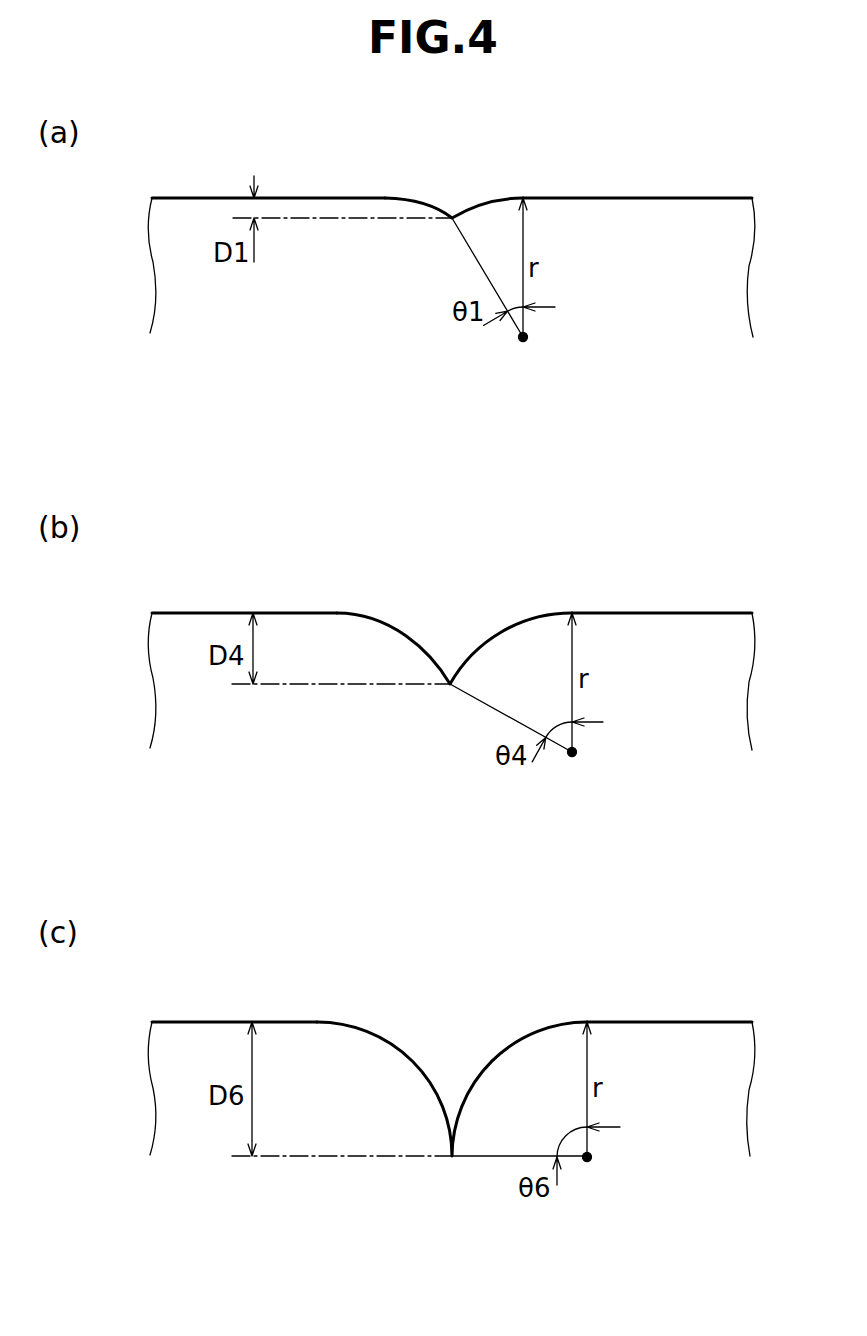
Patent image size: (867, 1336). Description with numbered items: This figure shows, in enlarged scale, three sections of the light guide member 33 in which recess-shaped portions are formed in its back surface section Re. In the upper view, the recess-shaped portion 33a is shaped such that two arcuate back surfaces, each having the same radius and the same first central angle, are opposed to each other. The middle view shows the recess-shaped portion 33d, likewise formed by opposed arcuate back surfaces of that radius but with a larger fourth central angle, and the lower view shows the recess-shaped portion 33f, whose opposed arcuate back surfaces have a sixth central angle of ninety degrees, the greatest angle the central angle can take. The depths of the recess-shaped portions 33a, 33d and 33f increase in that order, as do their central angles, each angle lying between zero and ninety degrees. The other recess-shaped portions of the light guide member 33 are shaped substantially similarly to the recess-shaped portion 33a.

The light guide member 33 is at (700, 197).
The recess-shaped portion 33a is at (435, 207).
The recess-shaped portion 33d is at (425, 640).
The recess-shaped portion 33f is at (418, 1065).
The back surface section Re is at (201, 197).